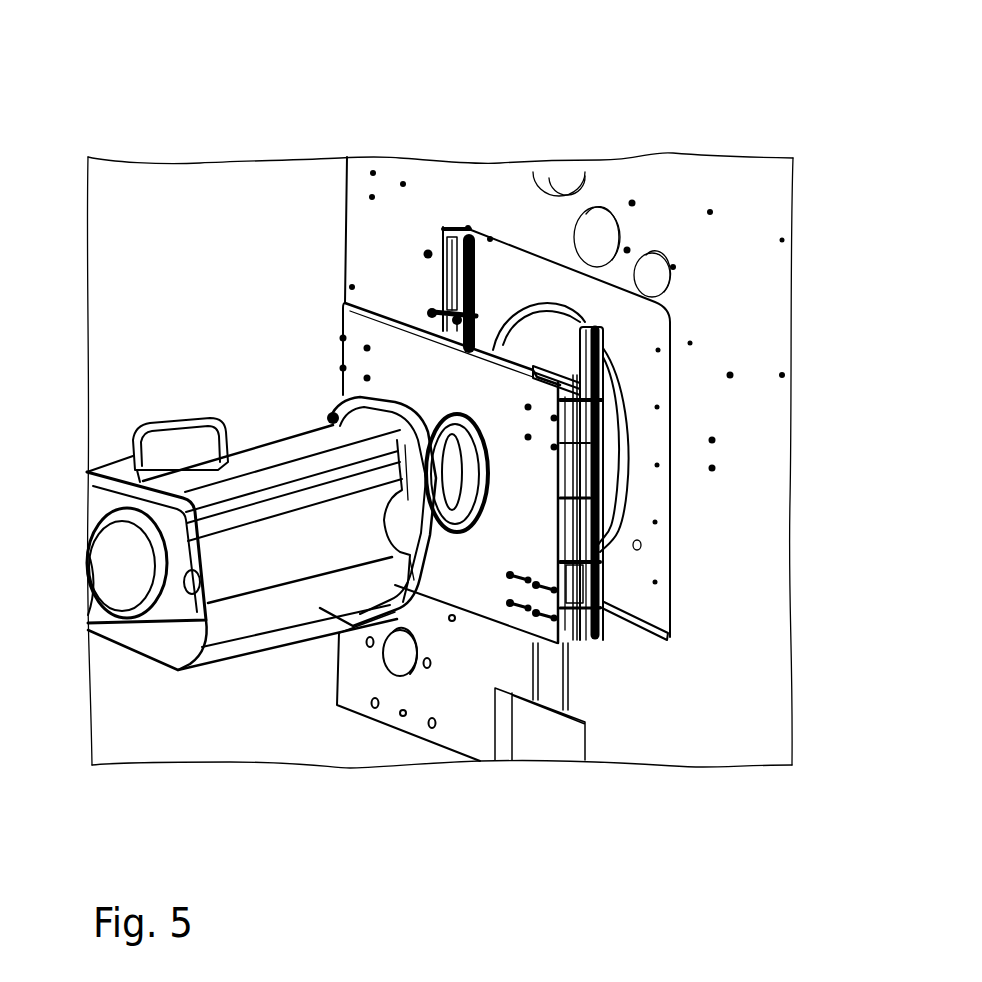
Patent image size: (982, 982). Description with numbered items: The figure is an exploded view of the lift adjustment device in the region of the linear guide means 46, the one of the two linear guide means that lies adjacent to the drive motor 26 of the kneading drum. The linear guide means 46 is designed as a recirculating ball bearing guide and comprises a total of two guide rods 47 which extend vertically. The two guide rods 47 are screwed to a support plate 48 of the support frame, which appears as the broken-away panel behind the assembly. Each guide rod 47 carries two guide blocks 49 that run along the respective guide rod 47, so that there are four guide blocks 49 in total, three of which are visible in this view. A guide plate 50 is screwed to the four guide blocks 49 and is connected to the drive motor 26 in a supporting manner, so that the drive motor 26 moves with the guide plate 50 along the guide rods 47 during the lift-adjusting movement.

The drive motor 26 is at (283, 613).
The linear guide means 46 is at (617, 527).
The guide rod 47 is at (462, 224).
The support plate 48 is at (752, 622).
The guide block 49 is at (438, 232).
The guide plate 50 is at (463, 603).